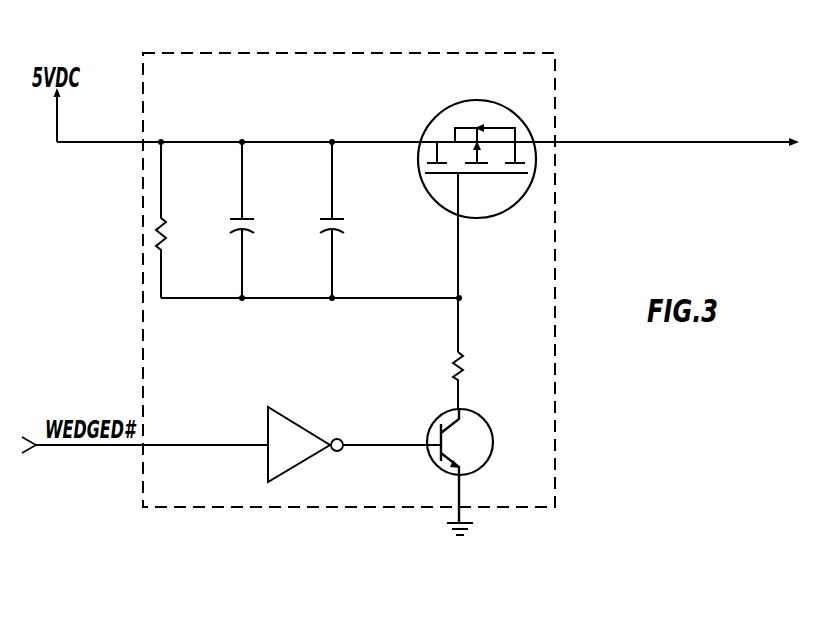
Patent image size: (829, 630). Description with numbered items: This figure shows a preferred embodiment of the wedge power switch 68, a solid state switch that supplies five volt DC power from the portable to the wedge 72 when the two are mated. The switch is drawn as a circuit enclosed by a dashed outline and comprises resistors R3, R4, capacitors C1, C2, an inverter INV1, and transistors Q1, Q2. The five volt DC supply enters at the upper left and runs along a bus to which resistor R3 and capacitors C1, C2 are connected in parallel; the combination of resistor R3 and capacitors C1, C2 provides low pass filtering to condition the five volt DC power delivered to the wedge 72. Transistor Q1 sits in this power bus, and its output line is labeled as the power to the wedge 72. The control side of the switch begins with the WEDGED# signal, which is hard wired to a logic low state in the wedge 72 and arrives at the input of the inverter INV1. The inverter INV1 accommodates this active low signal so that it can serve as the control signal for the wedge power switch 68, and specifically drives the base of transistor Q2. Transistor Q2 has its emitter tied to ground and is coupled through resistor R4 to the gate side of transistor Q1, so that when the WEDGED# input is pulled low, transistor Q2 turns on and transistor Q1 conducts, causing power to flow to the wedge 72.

The wedge power switch 68 is at (466, 53).
The wedge 72 is at (682, 127).
The transistor Q1 is at (477, 214).
The transistor Q2 is at (472, 466).
The resistor R3 is at (180, 220).
The resistor R4 is at (476, 380).
The capacitor C1 is at (257, 220).
The capacitor C2 is at (347, 220).
The inverter INV1 is at (305, 444).